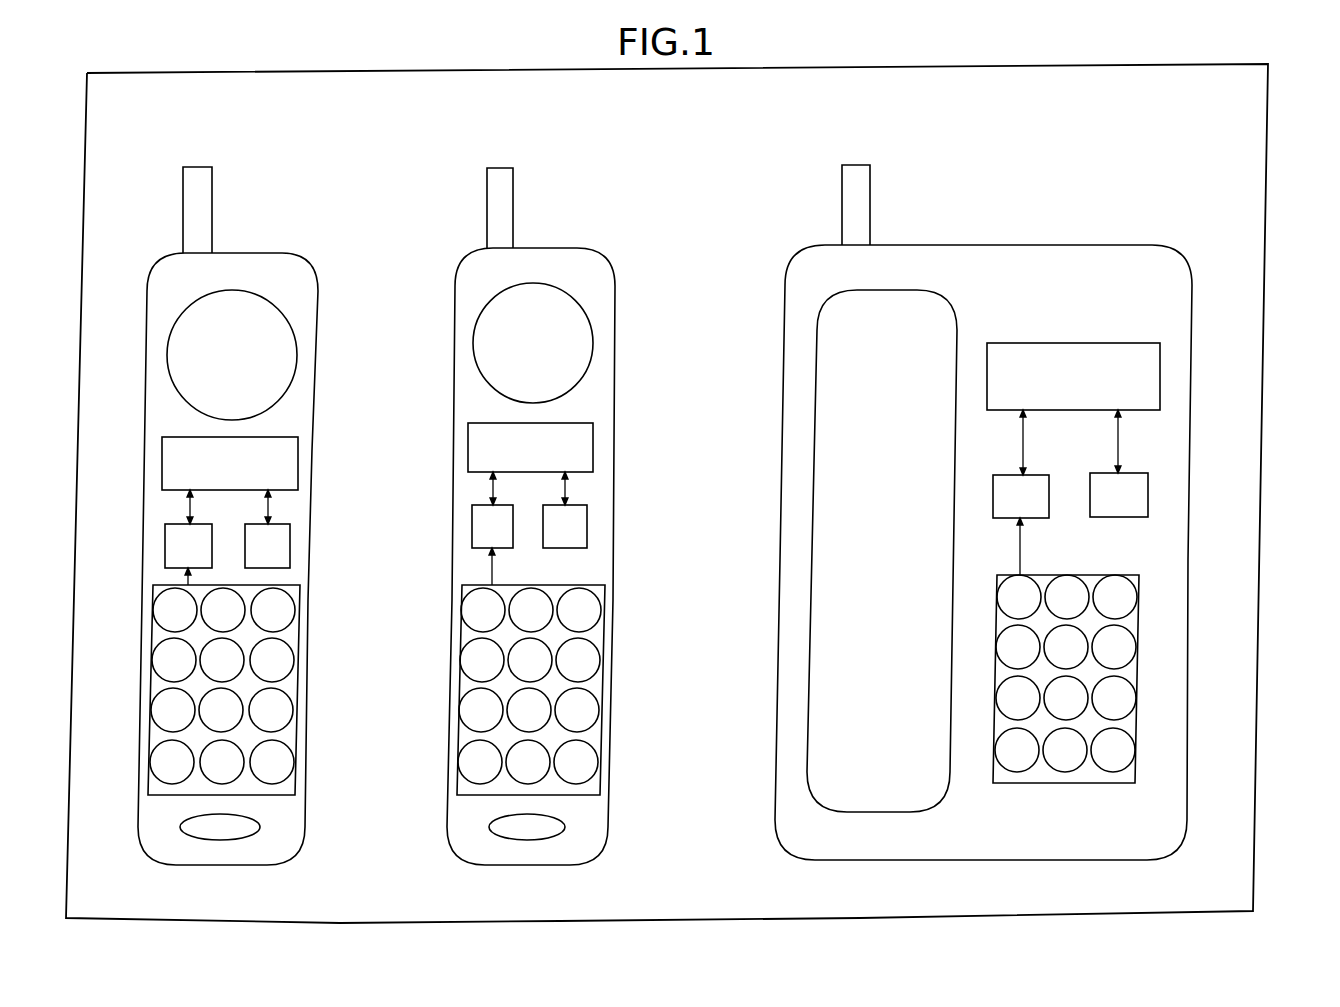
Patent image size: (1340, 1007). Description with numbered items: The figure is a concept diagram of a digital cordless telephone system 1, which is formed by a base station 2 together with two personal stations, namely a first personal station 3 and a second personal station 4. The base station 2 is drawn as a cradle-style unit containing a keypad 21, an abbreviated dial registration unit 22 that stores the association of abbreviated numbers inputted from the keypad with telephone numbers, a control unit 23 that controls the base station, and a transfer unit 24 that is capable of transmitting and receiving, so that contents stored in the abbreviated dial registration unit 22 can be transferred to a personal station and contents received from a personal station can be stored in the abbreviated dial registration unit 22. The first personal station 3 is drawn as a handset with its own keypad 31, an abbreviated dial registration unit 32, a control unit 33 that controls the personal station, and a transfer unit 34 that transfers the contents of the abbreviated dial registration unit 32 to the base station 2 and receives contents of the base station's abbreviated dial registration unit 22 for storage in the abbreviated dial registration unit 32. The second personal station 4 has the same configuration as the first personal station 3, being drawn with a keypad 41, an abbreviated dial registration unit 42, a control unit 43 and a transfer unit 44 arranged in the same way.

The cordless telephone system 1 is at (1268, 178).
The base station 2 is at (1050, 245).
The first personal station 3 is at (567, 248).
The second personal station 4 is at (262, 253).
The keypad 21 is at (1135, 723).
The abbreviated dial registration unit 22 is at (993, 497).
The control unit 23 is at (1160, 373).
The transfer unit 24 is at (1148, 497).
The keypad 31 is at (458, 688).
The abbreviated dial registration unit 32 is at (472, 550).
The control unit 33 is at (593, 456).
The transfer unit 34 is at (587, 526).
The keypad 41 is at (148, 688).
The abbreviated dial registration unit 42 is at (165, 548).
The control unit 43 is at (298, 462).
The transfer unit 44 is at (290, 548).